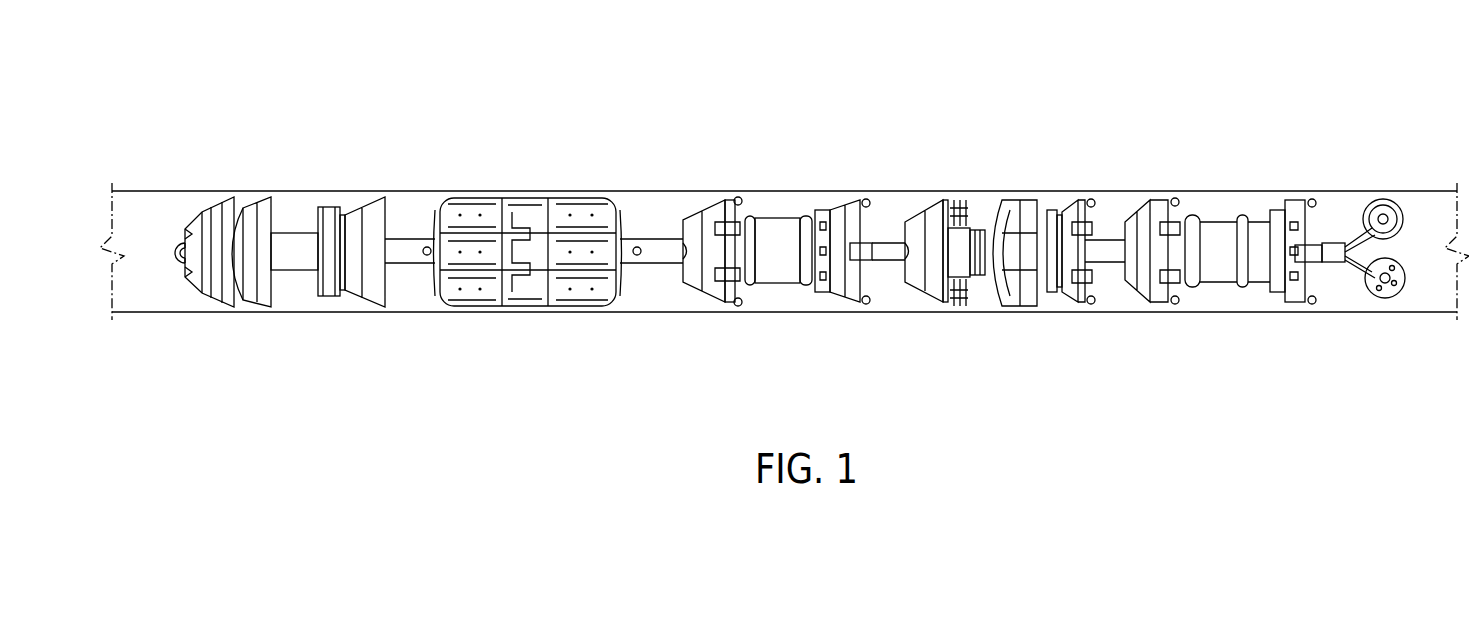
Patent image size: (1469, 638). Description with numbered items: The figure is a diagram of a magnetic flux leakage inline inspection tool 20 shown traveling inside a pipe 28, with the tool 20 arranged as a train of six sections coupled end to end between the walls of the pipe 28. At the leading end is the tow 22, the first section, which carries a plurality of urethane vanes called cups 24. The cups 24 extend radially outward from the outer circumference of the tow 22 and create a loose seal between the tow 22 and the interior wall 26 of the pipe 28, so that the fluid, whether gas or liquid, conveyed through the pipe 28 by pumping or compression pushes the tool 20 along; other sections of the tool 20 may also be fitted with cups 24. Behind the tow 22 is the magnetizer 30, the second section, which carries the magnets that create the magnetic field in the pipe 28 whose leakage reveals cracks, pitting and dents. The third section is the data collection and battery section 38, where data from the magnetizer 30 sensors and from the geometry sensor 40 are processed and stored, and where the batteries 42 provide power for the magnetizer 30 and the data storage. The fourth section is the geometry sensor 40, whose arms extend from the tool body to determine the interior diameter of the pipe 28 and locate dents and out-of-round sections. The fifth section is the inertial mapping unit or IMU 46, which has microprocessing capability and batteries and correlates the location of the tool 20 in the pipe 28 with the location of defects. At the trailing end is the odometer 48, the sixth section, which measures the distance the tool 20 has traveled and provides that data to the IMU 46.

The inline inspection tool 20 is at (328, 66).
The tow 22 is at (265, 199).
The cups 24 is at (225, 305).
The interior wall 26 is at (160, 305).
The pipe 28 is at (193, 191).
The magnetizer 30 is at (526, 198).
The data collection and battery section 38 is at (780, 202).
The geometry sensor 40 is at (962, 308).
The batteries 42 is at (1228, 233).
The inertial mapping unit (IMU) 46 is at (1200, 200).
The odometer 48 is at (1385, 300).